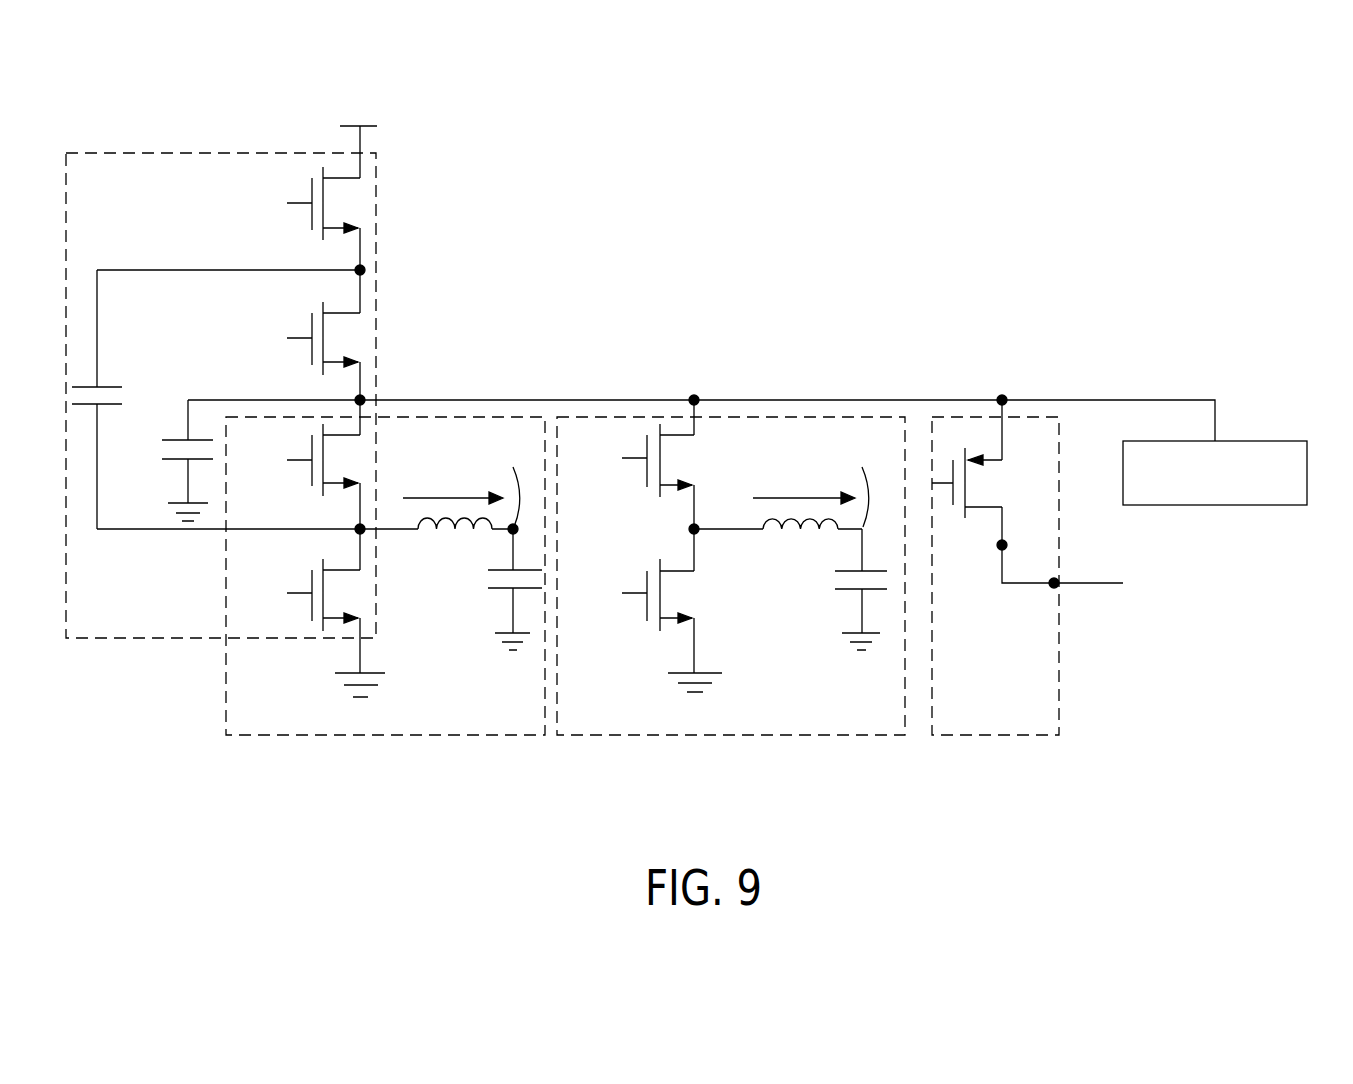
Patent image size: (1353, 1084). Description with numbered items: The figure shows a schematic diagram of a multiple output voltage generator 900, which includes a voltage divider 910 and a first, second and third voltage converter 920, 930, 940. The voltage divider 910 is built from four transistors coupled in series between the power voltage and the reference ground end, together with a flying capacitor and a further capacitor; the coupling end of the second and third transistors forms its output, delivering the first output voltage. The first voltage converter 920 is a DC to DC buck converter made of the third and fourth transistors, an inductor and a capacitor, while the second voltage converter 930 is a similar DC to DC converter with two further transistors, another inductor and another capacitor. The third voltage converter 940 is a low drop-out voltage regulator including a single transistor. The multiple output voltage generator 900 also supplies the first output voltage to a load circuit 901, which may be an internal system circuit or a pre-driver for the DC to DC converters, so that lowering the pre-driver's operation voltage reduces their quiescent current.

The multiple output voltage generator 900 is at (702, 443).
The load circuit 901 is at (1260, 441).
The voltage divider 910 is at (177, 152).
The first voltage converter 920 is at (453, 735).
The second voltage converter 930 is at (808, 735).
The third voltage converter 940 is at (1007, 735).